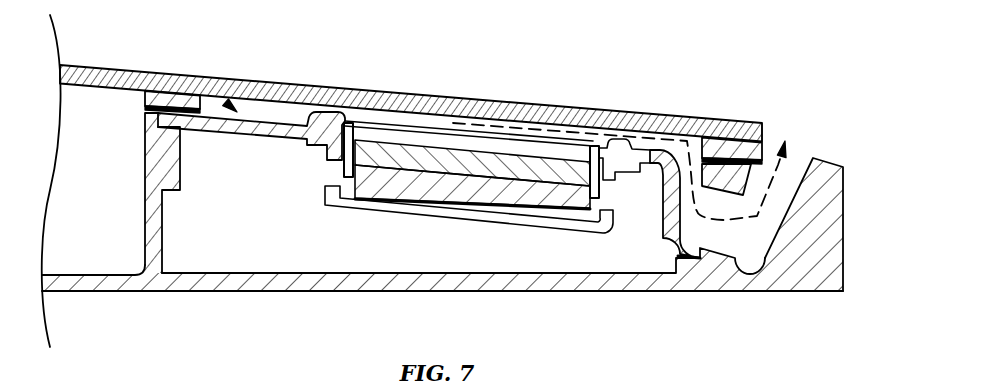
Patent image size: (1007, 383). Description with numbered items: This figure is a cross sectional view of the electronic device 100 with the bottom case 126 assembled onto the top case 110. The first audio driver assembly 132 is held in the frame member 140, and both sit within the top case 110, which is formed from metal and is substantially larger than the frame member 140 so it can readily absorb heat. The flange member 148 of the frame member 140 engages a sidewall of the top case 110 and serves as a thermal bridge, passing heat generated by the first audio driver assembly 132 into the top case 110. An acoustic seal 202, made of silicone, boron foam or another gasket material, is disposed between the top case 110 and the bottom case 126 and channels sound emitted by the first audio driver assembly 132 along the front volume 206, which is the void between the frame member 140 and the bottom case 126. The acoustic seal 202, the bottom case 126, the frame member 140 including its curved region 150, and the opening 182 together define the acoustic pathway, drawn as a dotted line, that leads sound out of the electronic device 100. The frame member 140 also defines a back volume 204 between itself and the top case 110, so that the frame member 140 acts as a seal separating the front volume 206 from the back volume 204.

The electronic device 100 is at (771, 60).
The bottom case 126 is at (573, 107).
The acoustic seal 202 is at (145, 95).
The front volume 206 is at (219, 80).
The flange member 148 is at (157, 146).
The frame member 140 is at (249, 156).
The first audio driver assembly 132 is at (297, 196).
The curved region 150 is at (706, 241).
The top case 110 is at (117, 293).
The opening 182 is at (765, 256).
The back volume 204 is at (436, 261).